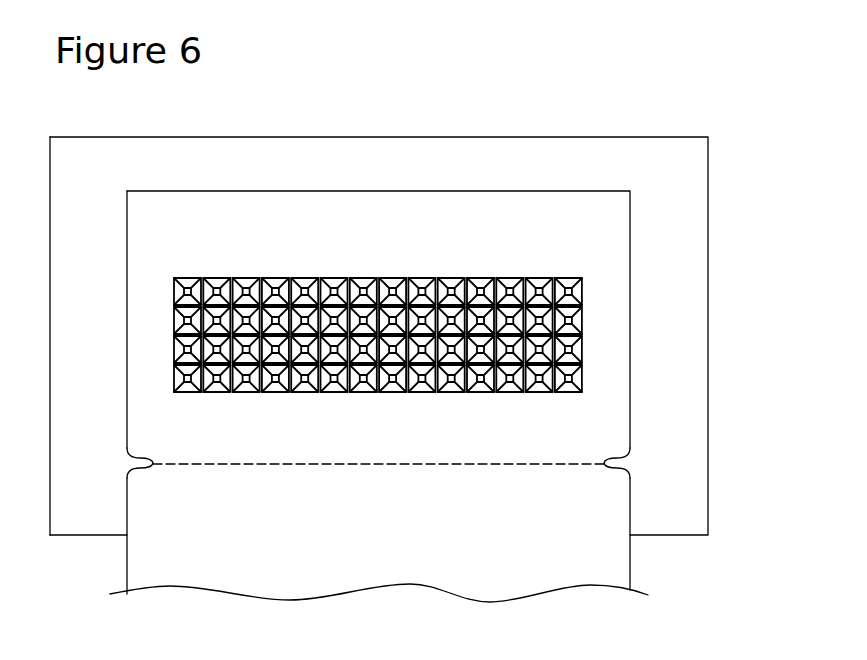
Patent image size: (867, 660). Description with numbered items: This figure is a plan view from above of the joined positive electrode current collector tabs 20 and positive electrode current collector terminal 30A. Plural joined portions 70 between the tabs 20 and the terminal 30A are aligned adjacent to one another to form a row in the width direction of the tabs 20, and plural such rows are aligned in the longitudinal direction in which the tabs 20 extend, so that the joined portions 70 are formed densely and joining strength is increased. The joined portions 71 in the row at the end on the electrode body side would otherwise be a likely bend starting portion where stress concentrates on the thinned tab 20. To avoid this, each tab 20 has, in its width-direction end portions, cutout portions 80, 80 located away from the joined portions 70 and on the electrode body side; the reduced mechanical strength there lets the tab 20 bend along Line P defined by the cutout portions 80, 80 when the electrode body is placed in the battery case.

The positive electrode current collector terminal 30A is at (687, 191).
The positive electrode current collector tab 20 is at (140, 566).
The joined portions 70 is at (428, 311).
The joined portions in the row on the electrode body side 71 is at (619, 381).
The cutout portion 80 is at (145, 473).
The Line P is at (379, 468).